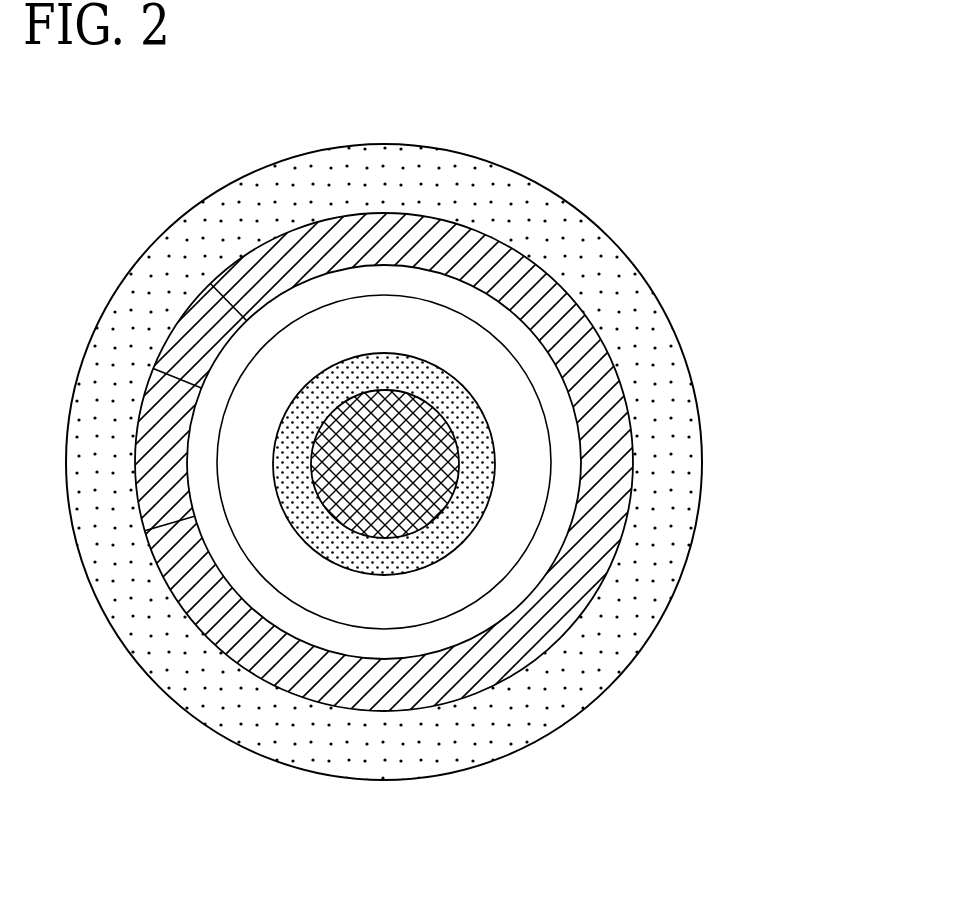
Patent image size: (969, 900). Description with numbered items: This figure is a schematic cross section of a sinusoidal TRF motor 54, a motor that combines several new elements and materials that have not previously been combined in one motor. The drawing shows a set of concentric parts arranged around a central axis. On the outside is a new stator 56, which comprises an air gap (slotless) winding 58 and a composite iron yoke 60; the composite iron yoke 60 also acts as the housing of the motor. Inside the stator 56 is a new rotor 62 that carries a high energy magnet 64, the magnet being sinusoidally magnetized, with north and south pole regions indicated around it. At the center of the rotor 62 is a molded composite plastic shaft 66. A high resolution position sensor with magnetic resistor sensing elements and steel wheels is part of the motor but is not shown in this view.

The sinusoidal TRF motor 54 is at (740, 100).
The stator 56 is at (402, 213).
The air gap (slotless) winding 58 is at (563, 328).
The composite iron yoke 60 is at (530, 232).
The rotor 62 is at (497, 441).
The high energy magnet 64 is at (517, 498).
The molded composite plastic shaft 66 is at (440, 515).